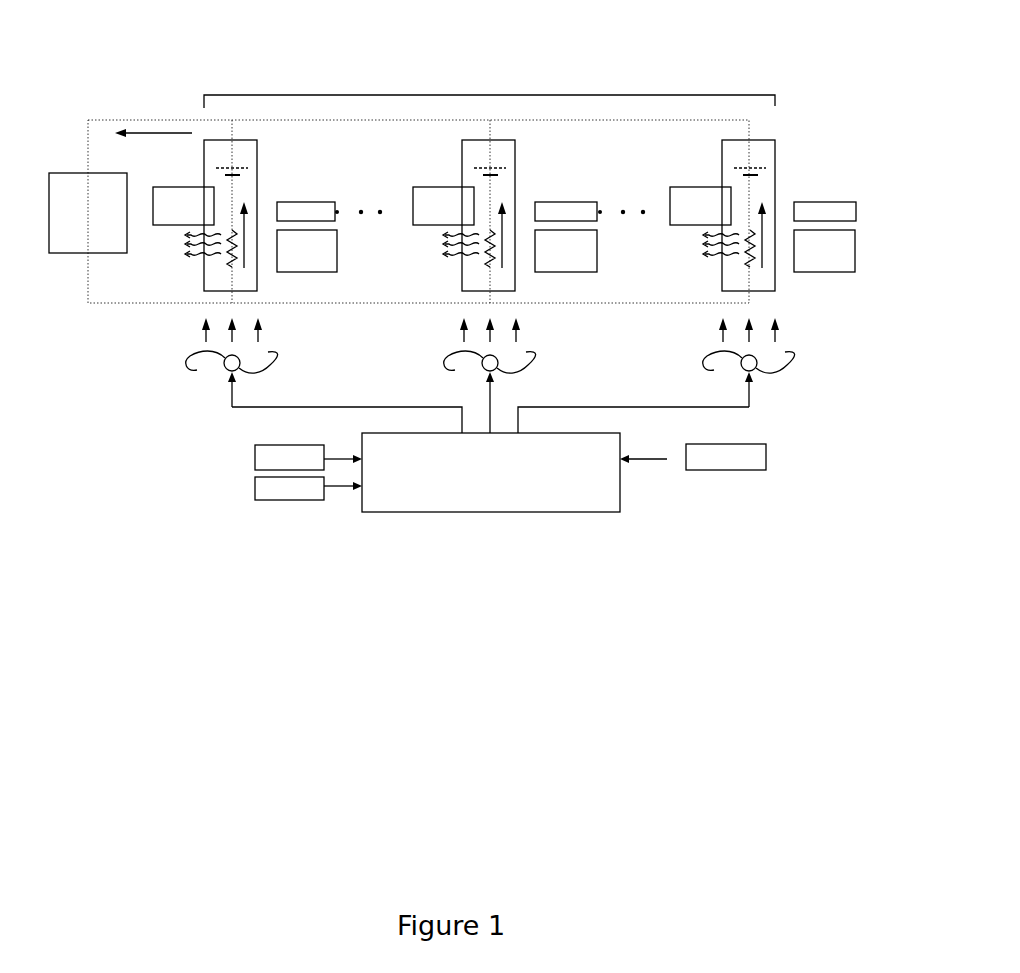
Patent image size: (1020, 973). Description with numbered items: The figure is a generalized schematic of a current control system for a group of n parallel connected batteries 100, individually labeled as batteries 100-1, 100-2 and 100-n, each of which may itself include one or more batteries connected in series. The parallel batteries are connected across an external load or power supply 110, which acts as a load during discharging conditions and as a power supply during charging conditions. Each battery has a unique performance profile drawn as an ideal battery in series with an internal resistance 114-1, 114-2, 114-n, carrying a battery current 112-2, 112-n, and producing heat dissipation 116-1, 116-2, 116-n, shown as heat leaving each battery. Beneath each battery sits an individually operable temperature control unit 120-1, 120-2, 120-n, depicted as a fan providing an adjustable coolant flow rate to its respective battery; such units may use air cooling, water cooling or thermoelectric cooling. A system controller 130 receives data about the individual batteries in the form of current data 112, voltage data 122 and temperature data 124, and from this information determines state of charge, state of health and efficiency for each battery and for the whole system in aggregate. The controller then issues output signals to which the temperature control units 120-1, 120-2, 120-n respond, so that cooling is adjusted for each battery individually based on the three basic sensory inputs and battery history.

The n parallel connected batteries 100 is at (468, 95).
The first parallel battery 100-1 is at (272, 152).
The second parallel battery 100-2 is at (530, 150).
The nth parallel battery 100-n is at (780, 140).
The external load or power supply 110 is at (78, 173).
The current data 112 is at (255, 460).
The battery current 112-2 is at (338, 214).
The nth battery current 112-n is at (857, 205).
The internal resistance of first battery 114-1 is at (337, 268).
The internal resistance of second battery 114-2 is at (620, 280).
The internal resistance of nth battery 114-n is at (855, 247).
The heat dissipation of first battery 116-1 is at (197, 187).
The heat dissipation of second battery 116-2 is at (447, 186).
The heat dissipation of nth battery 116-n is at (712, 186).
The first temperature control unit 120-1 is at (293, 358).
The second temperature control unit 120-2 is at (552, 358).
The nth temperature control unit 120-n is at (808, 358).
The voltage data 122 is at (766, 458).
The temperature data 124 is at (253, 487).
The system controller 130 is at (635, 498).